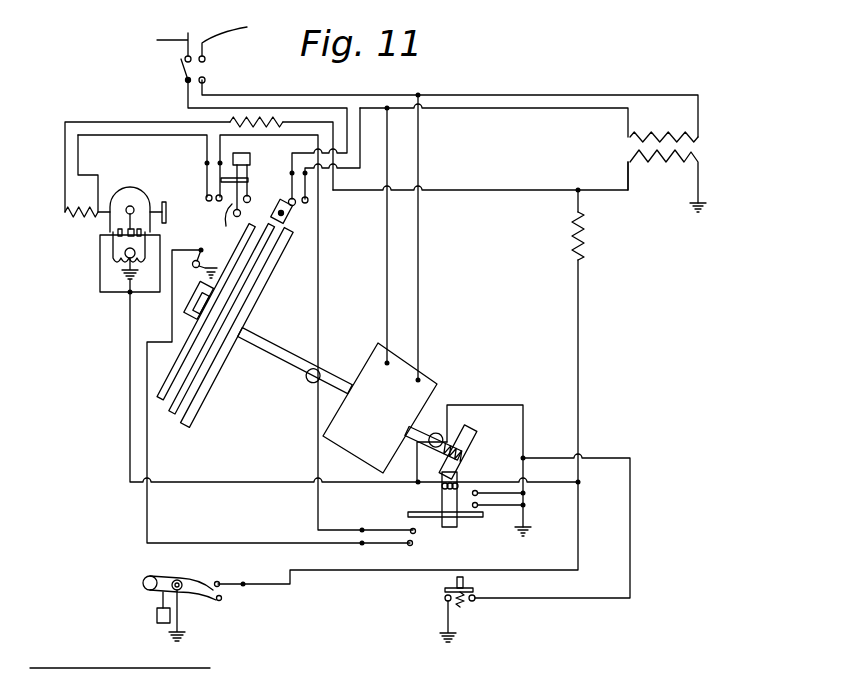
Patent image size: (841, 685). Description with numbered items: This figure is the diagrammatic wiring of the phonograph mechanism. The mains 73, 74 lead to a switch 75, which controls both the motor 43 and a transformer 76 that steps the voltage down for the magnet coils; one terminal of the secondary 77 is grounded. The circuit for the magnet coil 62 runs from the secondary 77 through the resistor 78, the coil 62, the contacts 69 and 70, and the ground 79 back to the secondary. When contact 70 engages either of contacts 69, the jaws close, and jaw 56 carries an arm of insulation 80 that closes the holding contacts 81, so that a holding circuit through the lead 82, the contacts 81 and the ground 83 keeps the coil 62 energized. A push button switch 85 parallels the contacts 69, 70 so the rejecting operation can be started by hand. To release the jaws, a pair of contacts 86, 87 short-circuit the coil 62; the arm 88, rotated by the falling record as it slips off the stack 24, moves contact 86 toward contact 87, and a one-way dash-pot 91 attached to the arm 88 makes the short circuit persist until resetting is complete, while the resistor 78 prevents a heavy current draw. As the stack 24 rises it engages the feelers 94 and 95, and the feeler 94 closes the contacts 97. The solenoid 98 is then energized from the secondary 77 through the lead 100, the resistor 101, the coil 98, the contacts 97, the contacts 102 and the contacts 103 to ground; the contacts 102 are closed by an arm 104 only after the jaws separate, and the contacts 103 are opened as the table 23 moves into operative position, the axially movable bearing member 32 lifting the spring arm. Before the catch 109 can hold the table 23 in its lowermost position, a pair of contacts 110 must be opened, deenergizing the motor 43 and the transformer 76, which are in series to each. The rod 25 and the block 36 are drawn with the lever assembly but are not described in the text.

The table 23 is at (190, 407).
The stack of records 24 is at (177, 353).
The connecting rod 25 is at (292, 357).
The axially movable bearing member 32 is at (185, 310).
The contact block 36 is at (183, 280).
The motor 43 is at (413, 393).
The jaw 56 is at (473, 438).
The magnet coil 62 is at (442, 485).
The contacts 69 is at (141, 232).
The contact 70 is at (133, 213).
The main 73 is at (156, 46).
The main 74 is at (229, 37).
The switch 75 is at (182, 70).
The transformer 76 is at (697, 148).
The secondary 77 is at (670, 173).
The resistor 78 is at (583, 260).
The ground 79 is at (130, 281).
The arm of insulation 80 is at (468, 517).
The contacts 81 is at (483, 503).
The lead 82 is at (493, 405).
The ground 83 is at (528, 525).
The push button switch 85 is at (443, 585).
The contact 86 is at (223, 601).
The contact 87 is at (215, 582).
The arm 88 is at (160, 592).
The one-way dash-pot 91 is at (157, 617).
The feeler 94 is at (227, 226).
The feeler 95 is at (248, 188).
The contacts 97 is at (206, 196).
The solenoid 98 is at (77, 220).
The lead 100 is at (478, 190).
The resistor 101 is at (276, 122).
The contacts 102 is at (412, 537).
The contacts 103 is at (203, 262).
The arm 104 is at (430, 517).
The catch 109 is at (284, 214).
The contacts 110 is at (300, 204).